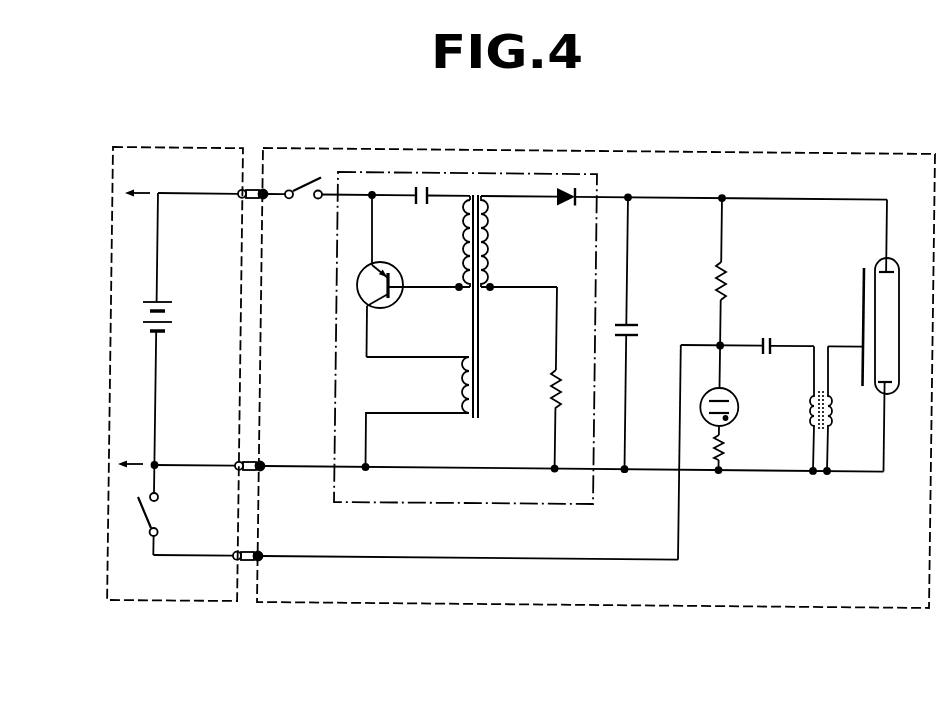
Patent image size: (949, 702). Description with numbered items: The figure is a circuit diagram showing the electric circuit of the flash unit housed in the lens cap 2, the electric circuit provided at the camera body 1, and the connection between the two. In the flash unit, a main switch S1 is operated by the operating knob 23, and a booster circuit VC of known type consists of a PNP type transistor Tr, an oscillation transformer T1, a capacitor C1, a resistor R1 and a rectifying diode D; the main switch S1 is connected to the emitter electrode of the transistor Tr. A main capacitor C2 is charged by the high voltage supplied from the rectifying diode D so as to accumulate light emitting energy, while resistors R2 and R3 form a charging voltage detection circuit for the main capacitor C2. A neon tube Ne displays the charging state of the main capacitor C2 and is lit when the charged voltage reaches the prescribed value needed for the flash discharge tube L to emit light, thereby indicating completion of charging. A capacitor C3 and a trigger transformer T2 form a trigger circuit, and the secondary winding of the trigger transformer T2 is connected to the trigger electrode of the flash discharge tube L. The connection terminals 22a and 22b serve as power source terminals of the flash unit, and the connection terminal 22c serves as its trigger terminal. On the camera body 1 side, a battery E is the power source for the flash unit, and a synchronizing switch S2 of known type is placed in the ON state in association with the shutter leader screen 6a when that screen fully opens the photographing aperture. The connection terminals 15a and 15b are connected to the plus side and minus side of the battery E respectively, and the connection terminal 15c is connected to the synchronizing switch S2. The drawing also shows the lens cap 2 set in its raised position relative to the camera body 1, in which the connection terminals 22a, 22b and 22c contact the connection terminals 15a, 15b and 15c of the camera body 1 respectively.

The camera body 1 is at (151, 143).
The lens cap 2 is at (684, 149).
The operating knob 23 is at (294, 151).
The shutter leader screen 6a is at (106, 529).
The connection terminal 15a is at (240, 199).
The connection terminal 15b is at (237, 470).
The connection terminal 15c is at (235, 560).
The connection terminal 22a is at (256, 199).
The connection terminal 22b is at (256, 471).
The connection terminal 22c is at (256, 561).
The main switch S1 is at (297, 186).
The synchronizing switch S2 is at (143, 511).
The battery E is at (170, 313).
The capacitor C1 is at (420, 208).
The transistor Tr is at (396, 301).
The oscillation transformer T1 is at (489, 290).
The resistor R1 is at (567, 378).
The rectifying diode D is at (568, 205).
The main capacitor C2 is at (634, 331).
The resistor R2 is at (734, 271).
The capacitor C3 is at (765, 337).
The neon tube Ne is at (735, 386).
The resistor R3 is at (731, 448).
The trigger transformer T2 is at (812, 413).
The flash discharge tube L is at (881, 336).
The booster circuit VC is at (512, 504).